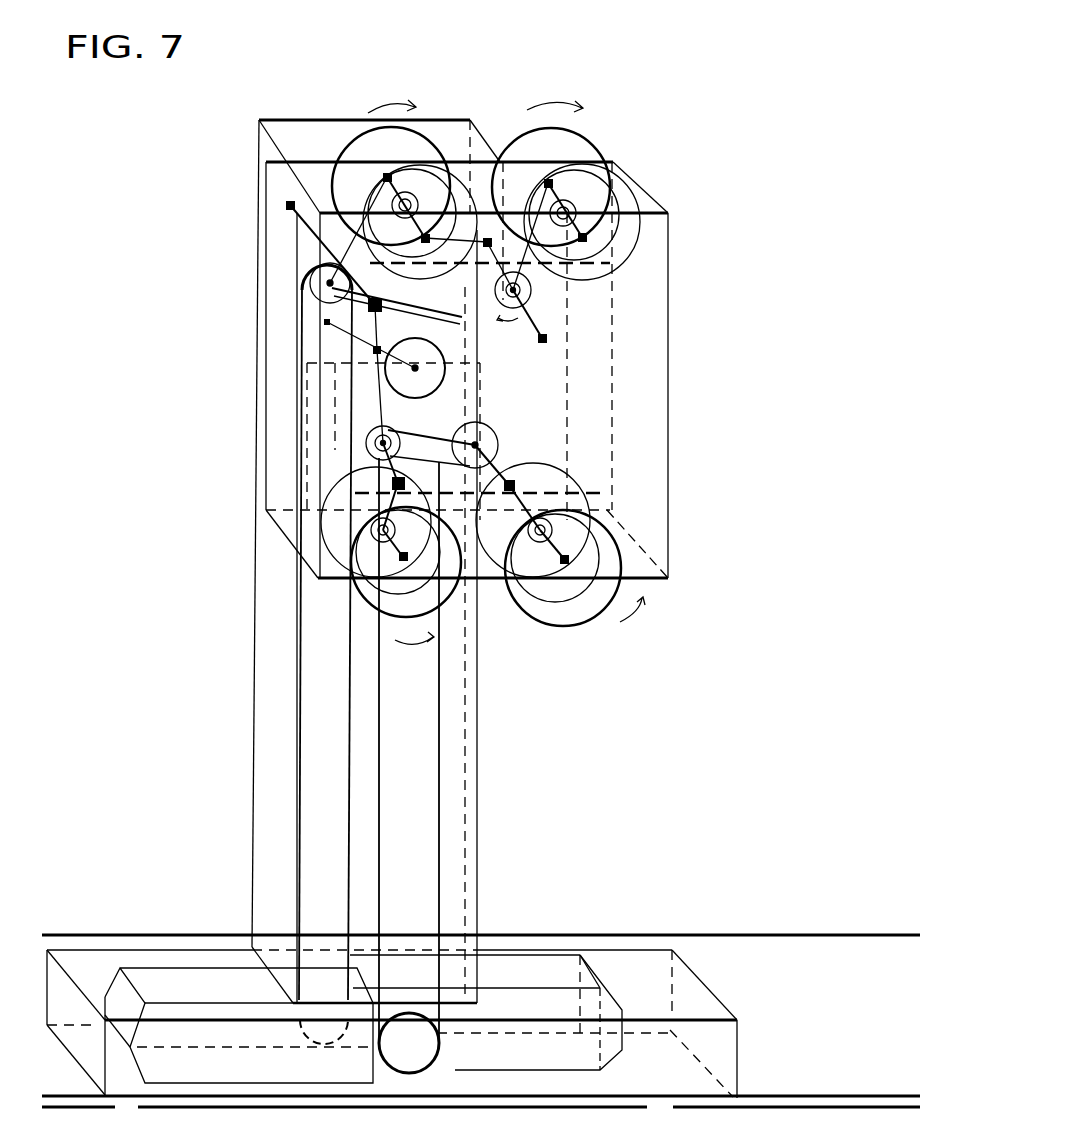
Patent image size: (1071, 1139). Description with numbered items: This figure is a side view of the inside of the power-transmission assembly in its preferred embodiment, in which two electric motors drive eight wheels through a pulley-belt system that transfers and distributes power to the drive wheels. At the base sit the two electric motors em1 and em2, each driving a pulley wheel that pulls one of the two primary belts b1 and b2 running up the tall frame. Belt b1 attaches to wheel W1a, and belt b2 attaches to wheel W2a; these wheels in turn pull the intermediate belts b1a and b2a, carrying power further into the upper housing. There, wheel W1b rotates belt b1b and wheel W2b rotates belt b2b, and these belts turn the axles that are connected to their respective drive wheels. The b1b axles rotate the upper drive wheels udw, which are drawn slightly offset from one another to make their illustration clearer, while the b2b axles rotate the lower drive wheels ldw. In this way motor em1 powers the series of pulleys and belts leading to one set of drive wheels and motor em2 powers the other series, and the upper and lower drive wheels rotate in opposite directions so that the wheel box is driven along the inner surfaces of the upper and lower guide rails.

The upper drive wheels udw is at (420, 160).
The lower drive wheels ldw is at (440, 619).
The wheel W1a is at (330, 285).
The wheel W1b is at (528, 296).
The wheel W2a is at (415, 368).
The wheel W2b is at (366, 443).
The belt b1a is at (462, 317).
The belt b1b is at (360, 250).
The belt b2a is at (470, 440).
The belt b2b is at (398, 483).
The belt b1 is at (298, 725).
The belt b2 is at (443, 757).
The electric motor em1 is at (175, 992).
The electric motor em2 is at (542, 972).